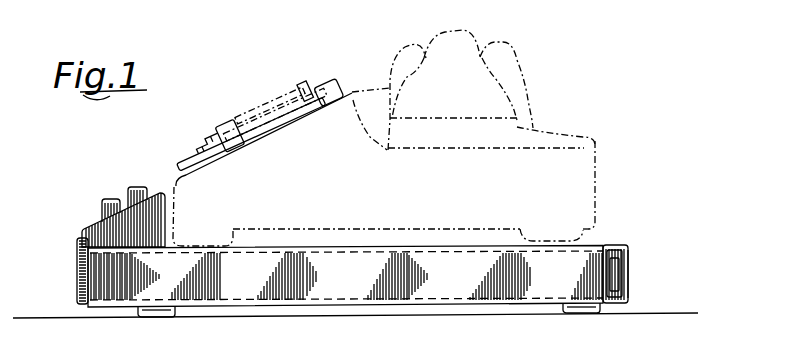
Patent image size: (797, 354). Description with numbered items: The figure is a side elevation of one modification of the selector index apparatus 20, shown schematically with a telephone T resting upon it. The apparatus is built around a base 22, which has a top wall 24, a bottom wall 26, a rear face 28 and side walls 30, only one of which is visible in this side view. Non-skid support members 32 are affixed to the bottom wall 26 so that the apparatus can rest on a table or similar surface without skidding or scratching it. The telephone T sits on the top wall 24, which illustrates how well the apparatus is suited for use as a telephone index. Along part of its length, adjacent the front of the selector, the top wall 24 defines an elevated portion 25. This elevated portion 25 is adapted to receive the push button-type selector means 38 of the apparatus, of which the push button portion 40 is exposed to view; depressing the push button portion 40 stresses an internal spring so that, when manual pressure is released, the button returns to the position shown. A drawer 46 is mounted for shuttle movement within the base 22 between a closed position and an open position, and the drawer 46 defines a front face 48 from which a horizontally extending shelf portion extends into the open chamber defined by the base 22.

The telephone T is at (563, 135).
The selector index apparatus 20 is at (635, 237).
The base 22 is at (322, 280).
The top wall 24 is at (607, 245).
The elevated portion 25 is at (160, 193).
The bottom wall 26 is at (497, 303).
The rear face 28 is at (631, 278).
The side walls 30 is at (540, 280).
The non-skid support members 32 is at (143, 317).
The push button-type selector means 38 is at (100, 195).
The push button portion 40 is at (112, 200).
The drawer 46 is at (76, 251).
The front face 48 is at (78, 276).